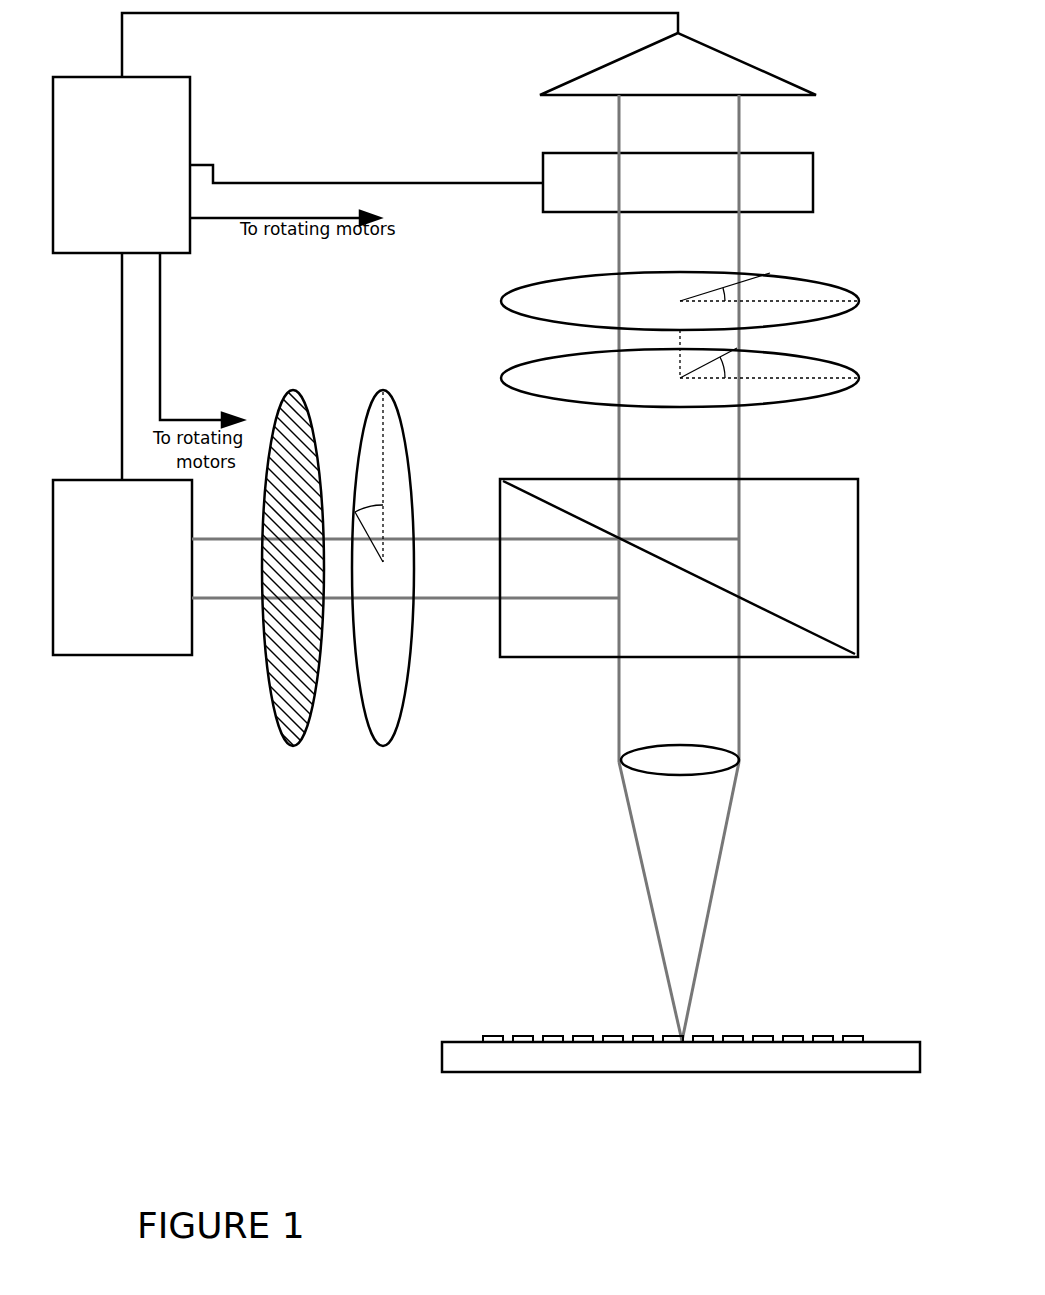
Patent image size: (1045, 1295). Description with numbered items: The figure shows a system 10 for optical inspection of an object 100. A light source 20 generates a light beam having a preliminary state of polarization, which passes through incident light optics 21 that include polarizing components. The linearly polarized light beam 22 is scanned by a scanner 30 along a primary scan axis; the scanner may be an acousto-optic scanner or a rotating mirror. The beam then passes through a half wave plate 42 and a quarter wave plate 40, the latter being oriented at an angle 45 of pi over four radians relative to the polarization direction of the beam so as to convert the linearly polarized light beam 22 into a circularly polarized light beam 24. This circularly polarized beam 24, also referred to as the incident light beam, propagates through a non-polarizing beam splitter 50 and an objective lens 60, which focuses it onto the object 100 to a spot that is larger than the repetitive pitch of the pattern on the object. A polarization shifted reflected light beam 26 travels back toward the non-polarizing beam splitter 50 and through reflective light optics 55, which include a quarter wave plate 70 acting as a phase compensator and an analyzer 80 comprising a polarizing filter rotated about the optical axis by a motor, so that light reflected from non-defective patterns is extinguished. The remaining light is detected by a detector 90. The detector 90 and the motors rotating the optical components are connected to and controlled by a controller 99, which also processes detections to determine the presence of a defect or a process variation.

The system 10 is at (515, 1243).
The light source 20 is at (724, 83).
The incident light optics 21 is at (440, 318).
The linearly polarized light beam 22 is at (742, 243).
The circularly polarized light beam 24 is at (617, 424).
The polarization shifted reflected light beam 26 is at (640, 855).
The scanner 30 is at (743, 194).
The quarter wave plate 40 is at (542, 398).
The half wave plate 42 is at (562, 278).
The rotation angle 45 is at (558, 428).
The non-polarizing beam splitter 50 is at (830, 478).
The reflective light optics 55 is at (300, 788).
The objective lens 60 is at (715, 748).
The quarter wave plate 70 is at (384, 392).
The analyzer 80 is at (290, 390).
The detector 90 is at (133, 590).
The controller 99 is at (133, 186).
The object 100 is at (455, 1042).